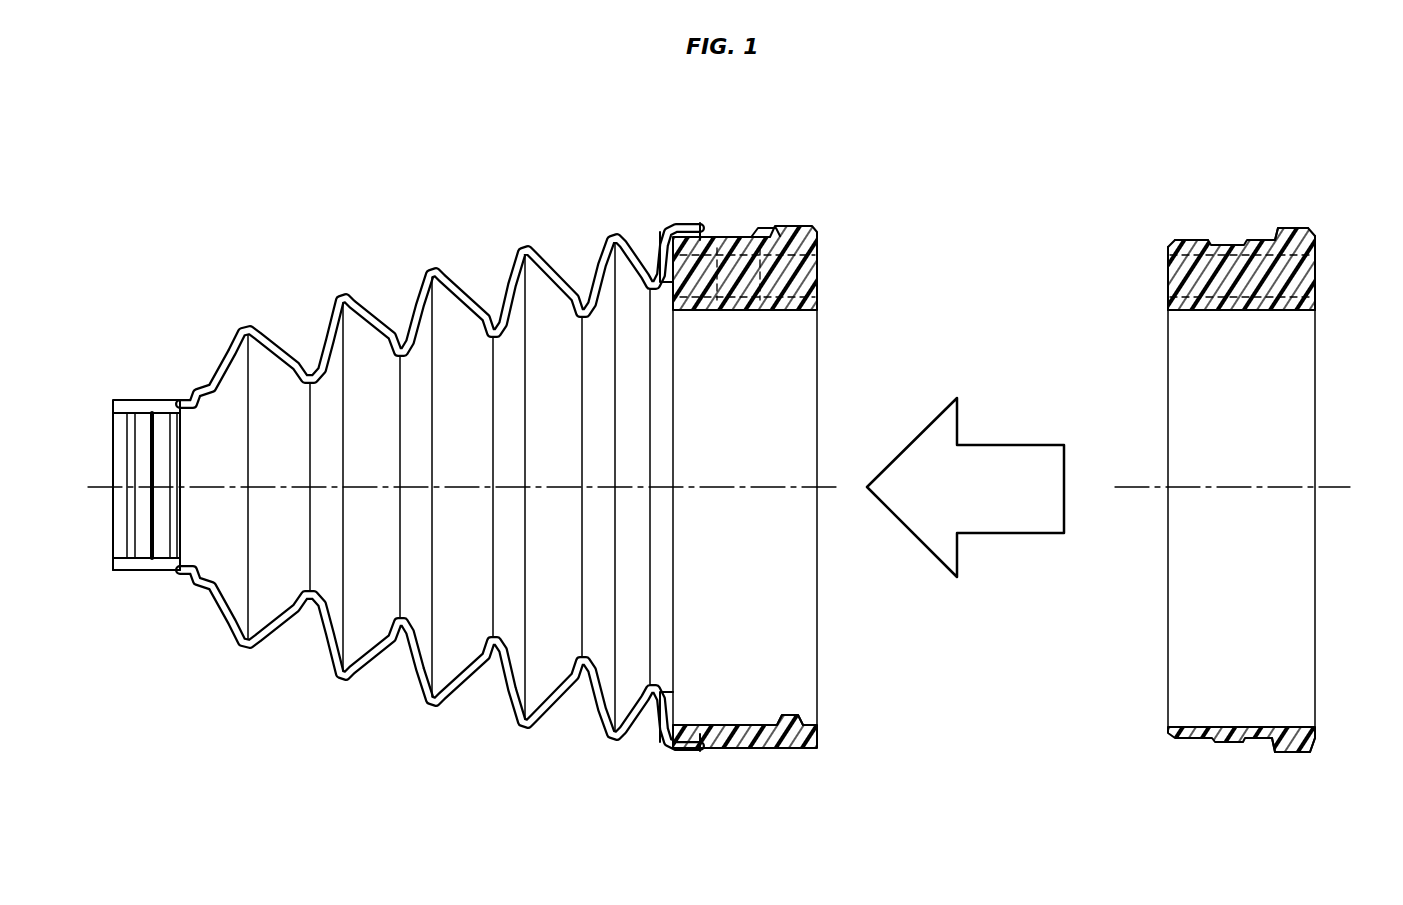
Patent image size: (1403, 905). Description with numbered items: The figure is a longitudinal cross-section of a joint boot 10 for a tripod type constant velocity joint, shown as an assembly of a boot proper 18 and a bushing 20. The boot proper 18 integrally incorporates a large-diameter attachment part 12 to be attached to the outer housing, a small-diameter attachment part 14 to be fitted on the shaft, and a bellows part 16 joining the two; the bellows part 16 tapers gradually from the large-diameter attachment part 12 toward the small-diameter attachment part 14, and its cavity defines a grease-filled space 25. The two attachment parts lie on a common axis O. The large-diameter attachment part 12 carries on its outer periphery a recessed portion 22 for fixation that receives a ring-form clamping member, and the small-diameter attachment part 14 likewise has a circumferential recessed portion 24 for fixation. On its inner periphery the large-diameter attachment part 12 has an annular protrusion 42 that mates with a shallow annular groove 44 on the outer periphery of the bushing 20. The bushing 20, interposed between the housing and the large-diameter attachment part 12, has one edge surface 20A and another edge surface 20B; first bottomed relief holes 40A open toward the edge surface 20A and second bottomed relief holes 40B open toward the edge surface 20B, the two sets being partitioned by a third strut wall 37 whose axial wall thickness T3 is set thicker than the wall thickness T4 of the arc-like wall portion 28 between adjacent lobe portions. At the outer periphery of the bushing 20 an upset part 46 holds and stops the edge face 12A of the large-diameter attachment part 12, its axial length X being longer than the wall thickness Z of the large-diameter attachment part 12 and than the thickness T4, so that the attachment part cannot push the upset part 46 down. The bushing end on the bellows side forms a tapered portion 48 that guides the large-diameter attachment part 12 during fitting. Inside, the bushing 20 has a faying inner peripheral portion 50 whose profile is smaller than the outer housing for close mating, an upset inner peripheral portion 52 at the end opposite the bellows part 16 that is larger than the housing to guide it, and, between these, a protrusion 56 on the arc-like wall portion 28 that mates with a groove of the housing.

The joint boot 10 is at (478, 441).
The large-diameter attachment part 12 is at (751, 445).
The edge face of the large-diameter attachment part 12A is at (772, 226).
The small-diameter attachment part 14 is at (146, 471).
The bellows part 16 is at (440, 487).
The boot proper 18 is at (420, 712).
The bushing 20 is at (1030, 461).
The one edge surface of the bushing 20A is at (1313, 240).
The other edge surface of the bushing 20B is at (1168, 244).
The recessed portion for fixation 22 is at (748, 747).
The recessed portion for fixation 24 is at (150, 575).
The grease-filled space 25 is at (277, 368).
The arc-like wall portion 28 is at (1225, 726).
The third strut wall 37 is at (1235, 287).
The first bottomed relief holes 40A is at (1317, 258).
The second bottomed relief holes 40B is at (1168, 262).
The annular protrusion 42 is at (762, 725).
The shallow annular groove 44 is at (1230, 744).
The upset part 46 is at (1290, 227).
The tapered portion 48 is at (1173, 238).
The faying inner peripheral portion 50 is at (1212, 307).
The upset inner peripheral portion 52 is at (1300, 731).
The protrusion 56 is at (1290, 727).
The common axis O is at (838, 485).
The wall thickness of the large-diameter attachment part Z is at (767, 224).
The wall thickness of the third strut wall T3 is at (1196, 170).
The wall thickness of the arc-like wall portion T4 is at (1198, 685).
The axial length of the upset part X is at (1272, 755).